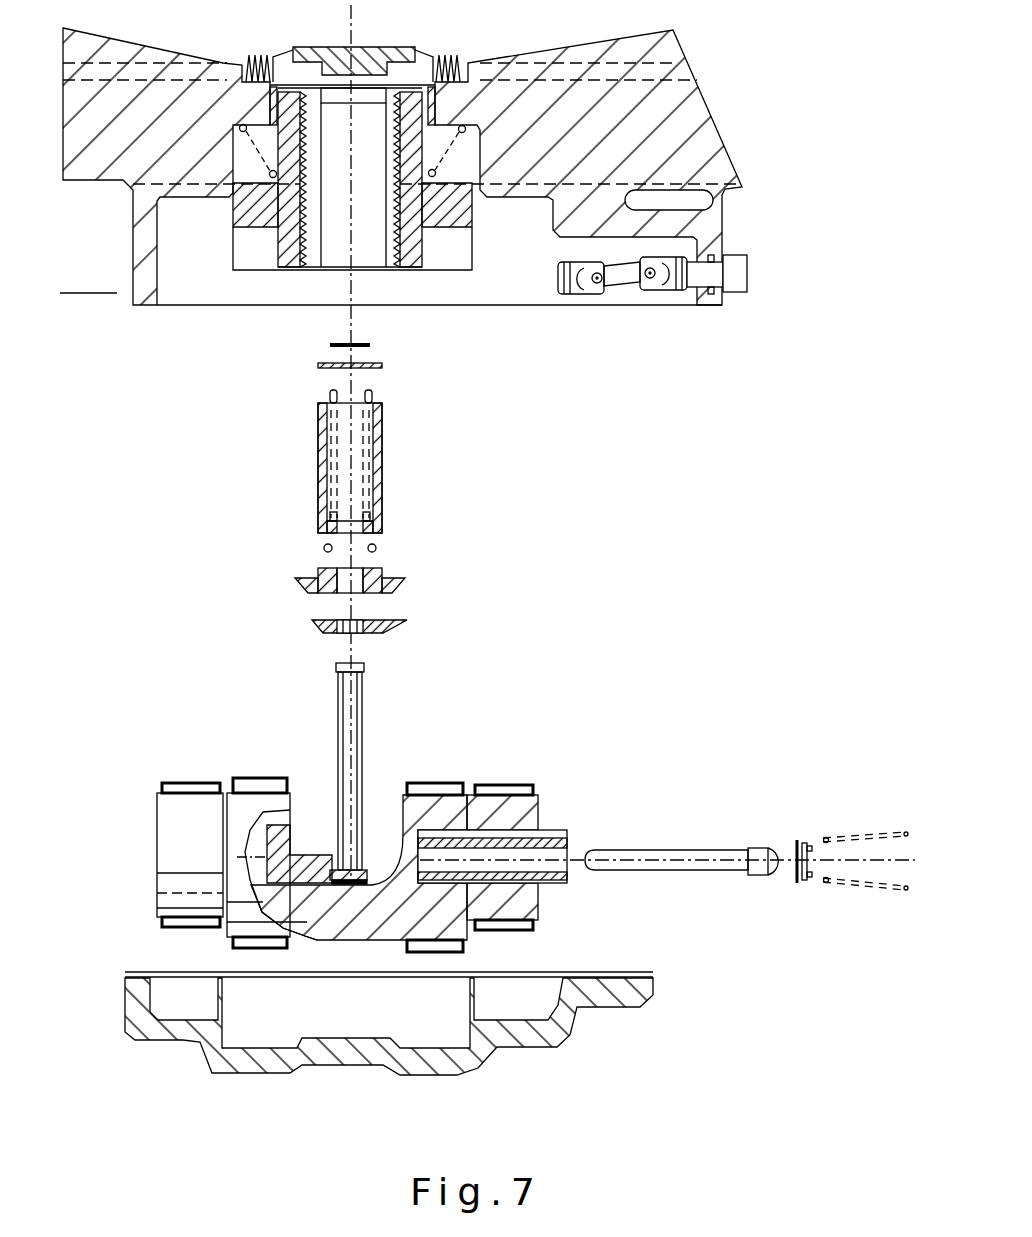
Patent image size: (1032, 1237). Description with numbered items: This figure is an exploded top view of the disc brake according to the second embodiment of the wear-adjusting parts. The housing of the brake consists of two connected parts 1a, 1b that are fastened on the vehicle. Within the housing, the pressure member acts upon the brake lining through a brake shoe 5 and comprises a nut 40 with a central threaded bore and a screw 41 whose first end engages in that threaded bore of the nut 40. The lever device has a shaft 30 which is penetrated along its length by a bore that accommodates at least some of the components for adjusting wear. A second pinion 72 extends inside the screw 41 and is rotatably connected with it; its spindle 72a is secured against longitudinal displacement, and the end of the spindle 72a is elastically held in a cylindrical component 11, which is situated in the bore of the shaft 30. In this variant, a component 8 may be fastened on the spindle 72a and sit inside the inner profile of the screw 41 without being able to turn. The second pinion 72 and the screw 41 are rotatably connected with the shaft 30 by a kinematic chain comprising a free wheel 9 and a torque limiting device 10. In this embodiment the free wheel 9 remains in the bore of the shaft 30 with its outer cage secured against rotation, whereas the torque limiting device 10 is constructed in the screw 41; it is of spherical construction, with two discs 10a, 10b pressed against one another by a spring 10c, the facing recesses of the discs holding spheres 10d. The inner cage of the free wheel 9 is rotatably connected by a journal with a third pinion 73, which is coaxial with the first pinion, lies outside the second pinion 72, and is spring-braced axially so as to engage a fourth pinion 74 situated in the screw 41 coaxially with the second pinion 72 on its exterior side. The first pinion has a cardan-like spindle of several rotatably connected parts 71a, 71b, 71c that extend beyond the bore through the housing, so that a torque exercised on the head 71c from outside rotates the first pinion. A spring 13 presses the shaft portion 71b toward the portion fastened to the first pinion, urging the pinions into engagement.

The housing part 1a is at (117, 293).
The housing part 1b is at (163, 1043).
The brake shoe 5 is at (362, 47).
The component 8 is at (373, 362).
The free wheel 9 is at (498, 820).
The torque limiting device 10 is at (373, 486).
The disc 10a is at (317, 576).
The disc 10b is at (320, 527).
The spring 10c is at (373, 392).
The spheres 10d is at (378, 550).
The cylindrical component 11 is at (290, 850).
The spring 13 is at (855, 890).
The shaft 30 is at (150, 890).
The nut 40 is at (462, 215).
The screw 41 is at (412, 250).
The shaft part 71a is at (587, 848).
The shaft portion 71b is at (622, 278).
The head 71c is at (730, 262).
The second pinion 72 is at (383, 626).
The spindle 72a is at (338, 703).
The third pinion 73 is at (423, 840).
The fourth pinion 74 is at (393, 590).